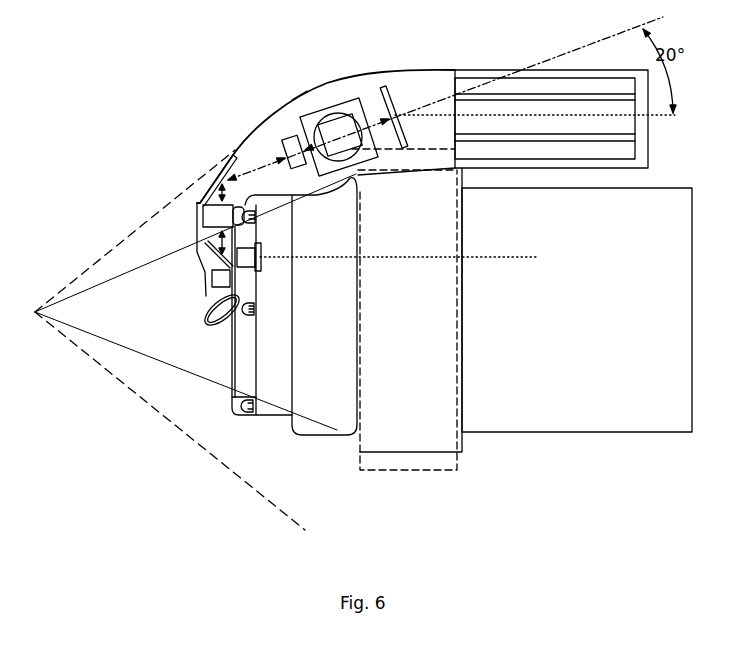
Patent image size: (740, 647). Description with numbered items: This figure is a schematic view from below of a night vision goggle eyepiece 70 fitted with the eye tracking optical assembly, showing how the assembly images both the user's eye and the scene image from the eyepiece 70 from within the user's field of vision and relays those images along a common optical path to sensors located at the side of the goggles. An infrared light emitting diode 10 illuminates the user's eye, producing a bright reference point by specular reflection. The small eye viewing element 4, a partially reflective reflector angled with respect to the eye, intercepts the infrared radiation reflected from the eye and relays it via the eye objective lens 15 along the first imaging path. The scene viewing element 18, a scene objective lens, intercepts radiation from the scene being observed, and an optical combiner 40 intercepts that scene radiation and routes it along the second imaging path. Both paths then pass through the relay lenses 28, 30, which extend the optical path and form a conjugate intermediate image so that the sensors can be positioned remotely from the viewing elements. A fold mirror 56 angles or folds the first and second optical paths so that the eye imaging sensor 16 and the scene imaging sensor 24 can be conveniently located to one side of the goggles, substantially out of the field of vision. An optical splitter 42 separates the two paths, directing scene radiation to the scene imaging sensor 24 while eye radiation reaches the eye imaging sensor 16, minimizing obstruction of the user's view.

The eye viewing element 4 is at (212, 322).
The infrared light emitting diode 10 is at (232, 416).
The eye objective lens 15 is at (212, 280).
The eye imaging sensor 16 is at (388, 86).
The scene viewing element 18 is at (261, 265).
The scene imaging sensor 24 is at (335, 100).
The relay lens 28 is at (282, 140).
The relay lens 30 is at (203, 216).
The optical combiner 40 is at (226, 256).
The optical splitter 42 is at (316, 131).
The fold mirror 56 is at (218, 186).
The night vision goggle eyepiece 70 is at (285, 314).